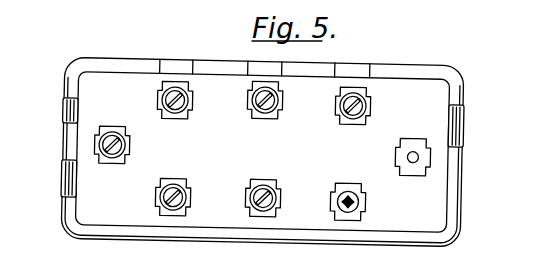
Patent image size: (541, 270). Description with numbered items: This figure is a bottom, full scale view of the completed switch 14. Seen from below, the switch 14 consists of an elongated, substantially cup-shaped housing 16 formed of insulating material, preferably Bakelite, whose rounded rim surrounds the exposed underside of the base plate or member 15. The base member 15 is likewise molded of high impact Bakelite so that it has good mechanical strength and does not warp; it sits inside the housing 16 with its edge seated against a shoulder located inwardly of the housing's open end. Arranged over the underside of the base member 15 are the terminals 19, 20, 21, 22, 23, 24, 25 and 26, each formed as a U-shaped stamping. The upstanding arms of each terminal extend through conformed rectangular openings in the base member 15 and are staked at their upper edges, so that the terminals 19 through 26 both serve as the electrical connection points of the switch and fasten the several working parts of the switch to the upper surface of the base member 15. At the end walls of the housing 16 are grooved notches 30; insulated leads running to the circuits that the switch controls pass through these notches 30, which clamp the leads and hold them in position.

The switch 14 is at (463, 53).
The base plate or member 15 is at (432, 93).
The housing 16 is at (157, 63).
The terminal 19 is at (116, 166).
The terminal 20 is at (185, 118).
The terminal 21 is at (181, 181).
The terminal 22 is at (282, 118).
The terminal 23 is at (273, 185).
The terminal 24 is at (360, 125).
The terminal 25 is at (352, 187).
The terminal 26 is at (415, 137).
The grooved notches 30 is at (68, 112).